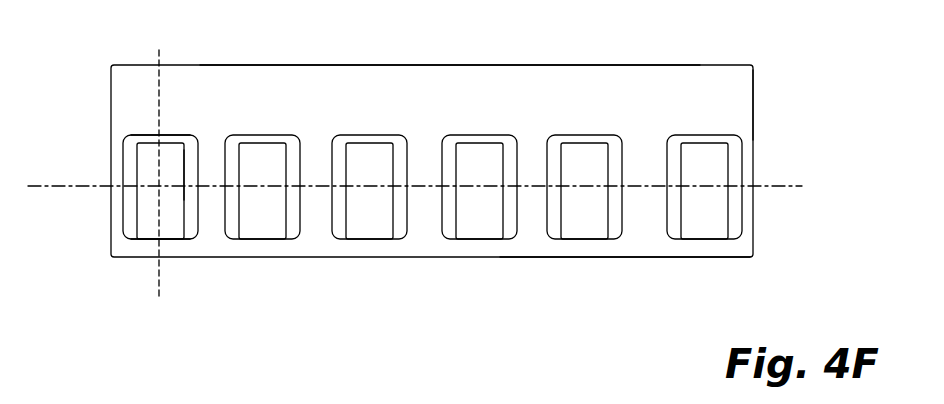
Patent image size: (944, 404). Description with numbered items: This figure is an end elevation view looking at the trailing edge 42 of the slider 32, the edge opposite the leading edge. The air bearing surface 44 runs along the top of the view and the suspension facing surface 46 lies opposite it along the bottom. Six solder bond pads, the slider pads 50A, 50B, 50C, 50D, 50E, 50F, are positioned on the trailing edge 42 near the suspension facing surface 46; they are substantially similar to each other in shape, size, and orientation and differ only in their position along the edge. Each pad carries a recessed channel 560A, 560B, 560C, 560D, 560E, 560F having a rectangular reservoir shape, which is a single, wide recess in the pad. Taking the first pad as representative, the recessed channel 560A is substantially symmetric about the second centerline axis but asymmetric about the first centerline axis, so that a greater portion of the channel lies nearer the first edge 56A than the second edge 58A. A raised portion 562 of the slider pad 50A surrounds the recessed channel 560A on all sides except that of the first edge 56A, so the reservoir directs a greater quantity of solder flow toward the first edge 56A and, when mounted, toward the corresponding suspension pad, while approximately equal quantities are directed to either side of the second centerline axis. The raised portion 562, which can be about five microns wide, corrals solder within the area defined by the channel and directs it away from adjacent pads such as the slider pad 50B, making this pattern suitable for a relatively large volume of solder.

The slider 32 is at (753, 65).
The trailing edge 42 is at (706, 118).
The air bearing surface 44 is at (575, 65).
The suspension facing surface 46 is at (754, 258).
The slider pad 50A is at (143, 240).
The slider pad 50B is at (270, 240).
The slider pad 50C is at (376, 240).
The slider pad 50D is at (478, 240).
The slider pad 50E is at (582, 240).
The slider pad 50F is at (695, 240).
The first edge 56A is at (137, 239).
The second edge 58A is at (137, 135).
The recessed channel 560A is at (182, 225).
The recessed channel 560B is at (286, 226).
The recessed channel 560C is at (393, 224).
The recessed channel 560D is at (501, 222).
The recessed channel 560E is at (609, 223).
The recessed channel 560F is at (728, 223).
The raised portion 562 is at (187, 148).